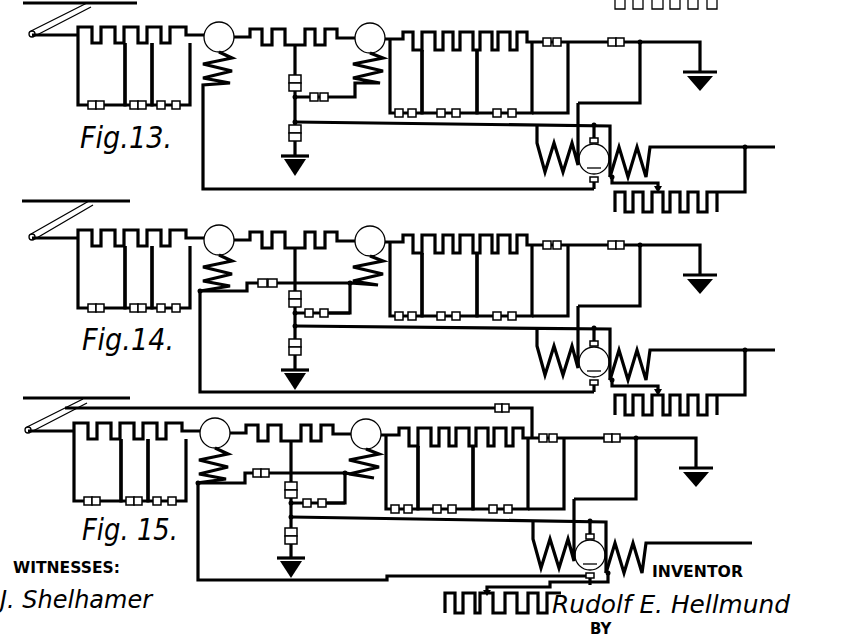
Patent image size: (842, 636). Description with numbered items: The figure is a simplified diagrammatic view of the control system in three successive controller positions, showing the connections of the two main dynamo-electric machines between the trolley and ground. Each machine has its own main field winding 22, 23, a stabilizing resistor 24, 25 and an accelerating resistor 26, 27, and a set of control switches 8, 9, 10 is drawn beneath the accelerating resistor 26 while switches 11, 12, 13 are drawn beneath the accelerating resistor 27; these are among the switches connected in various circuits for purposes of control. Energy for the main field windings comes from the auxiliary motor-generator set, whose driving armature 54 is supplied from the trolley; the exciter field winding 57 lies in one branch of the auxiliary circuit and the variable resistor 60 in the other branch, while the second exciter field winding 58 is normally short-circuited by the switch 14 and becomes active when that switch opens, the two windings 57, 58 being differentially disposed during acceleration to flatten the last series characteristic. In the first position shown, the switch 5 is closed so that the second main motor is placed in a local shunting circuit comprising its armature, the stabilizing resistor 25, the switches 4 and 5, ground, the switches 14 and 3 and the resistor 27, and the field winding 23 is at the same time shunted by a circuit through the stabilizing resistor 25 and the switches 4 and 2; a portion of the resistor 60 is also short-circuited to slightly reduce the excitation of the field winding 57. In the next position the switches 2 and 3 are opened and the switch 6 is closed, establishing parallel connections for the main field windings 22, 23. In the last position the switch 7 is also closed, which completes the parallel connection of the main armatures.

In FIG. 13, the switch 2 is at (327, 96).
In FIG. 14, the switch 2 is at (322, 302).
In FIG. 15, the switch 2 is at (318, 493).
In FIG. 13, the switch 3 is at (557, 38).
In FIG. 14, the switch 3 is at (575, 233).
In FIG. 15, the switch 3 is at (571, 454).
In FIG. 13, the switch 4 is at (301, 85).
In FIG. 14, the switch 4 is at (302, 287).
In FIG. 15, the switch 4 is at (298, 479).
In FIG. 13, the switch 5 is at (301, 134).
In FIG. 14, the switch 5 is at (304, 348).
In FIG. 15, the switch 5 is at (300, 537).
In FIG. 14, the switch 6 is at (275, 296).
In FIG. 15, the switch 6 is at (272, 484).
In FIG. 15, the switch 7 is at (310, 421).
In FIG. 13, the switch 8 is at (97, 101).
In FIG. 14, the switch 8 is at (101, 279).
In FIG. 15, the switch 8 is at (97, 472).
In FIG. 13, the switch 9 is at (134, 101).
In FIG. 14, the switch 9 is at (138, 279).
In FIG. 15, the switch 9 is at (134, 472).
In FIG. 13, the switch 10 is at (166, 101).
In FIG. 14, the switch 10 is at (171, 279).
In FIG. 15, the switch 10 is at (167, 472).
In FIG. 13, the switch 11 is at (400, 109).
In FIG. 14, the switch 11 is at (406, 281).
In FIG. 15, the switch 11 is at (402, 474).
In FIG. 13, the switch 12 is at (448, 109).
In FIG. 14, the switch 12 is at (449, 286).
In FIG. 15, the switch 12 is at (445, 479).
In FIG. 13, the switch 13 is at (503, 109).
In FIG. 14, the switch 13 is at (504, 282).
In FIG. 15, the switch 13 is at (500, 475).
In FIG. 13, the switch 14 is at (614, 36).
In FIG. 14, the switch 14 is at (653, 248).
In FIG. 15, the switch 14 is at (646, 454).
In FIG. 13, the field winding 22 is at (231, 76).
In FIG. 14, the field winding 22 is at (397, 323).
In FIG. 15, the field winding 22 is at (394, 514).
In FIG. 13, the field winding 23 is at (372, 82).
In FIG. 14, the field winding 23 is at (356, 284).
In FIG. 15, the field winding 23 is at (353, 476).
In FIG. 13, the stabilizing resistor 24 is at (272, 28).
In FIG. 14, the stabilizing resistor 24 is at (264, 230).
In FIG. 15, the stabilizing resistor 24 is at (260, 447).
In FIG. 13, the stabilizing resistor 25 is at (334, 28).
In FIG. 14, the stabilizing resistor 25 is at (325, 229).
In FIG. 15, the stabilizing resistor 25 is at (321, 446).
In FIG. 13, the accelerating resistor 26 is at (155, 29).
In FIG. 14, the accelerating resistor 26 is at (141, 227).
In FIG. 15, the accelerating resistor 26 is at (137, 446).
In FIG. 13, the accelerating resistor 27 is at (484, 29).
In FIG. 14, the accelerating resistor 27 is at (464, 232).
In FIG. 15, the accelerating resistor 27 is at (460, 449).
In FIG. 13, the driving armature 54 is at (594, 156).
In FIG. 14, the driving armature 54 is at (594, 359).
In FIG. 15, the driving armature 54 is at (590, 552).
In FIG. 13, the field winding 57 is at (624, 150).
In FIG. 14, the field winding 57 is at (693, 351).
In FIG. 15, the field winding 57 is at (679, 542).
In FIG. 13, the field winding 58 is at (540, 163).
In FIG. 14, the field winding 58 is at (539, 343).
In FIG. 15, the field winding 58 is at (535, 533).
In FIG. 13, the variable resistor 60 is at (685, 192).
In FIG. 14, the variable resistor 60 is at (680, 382).
In FIG. 15, the variable resistor 60 is at (526, 603).